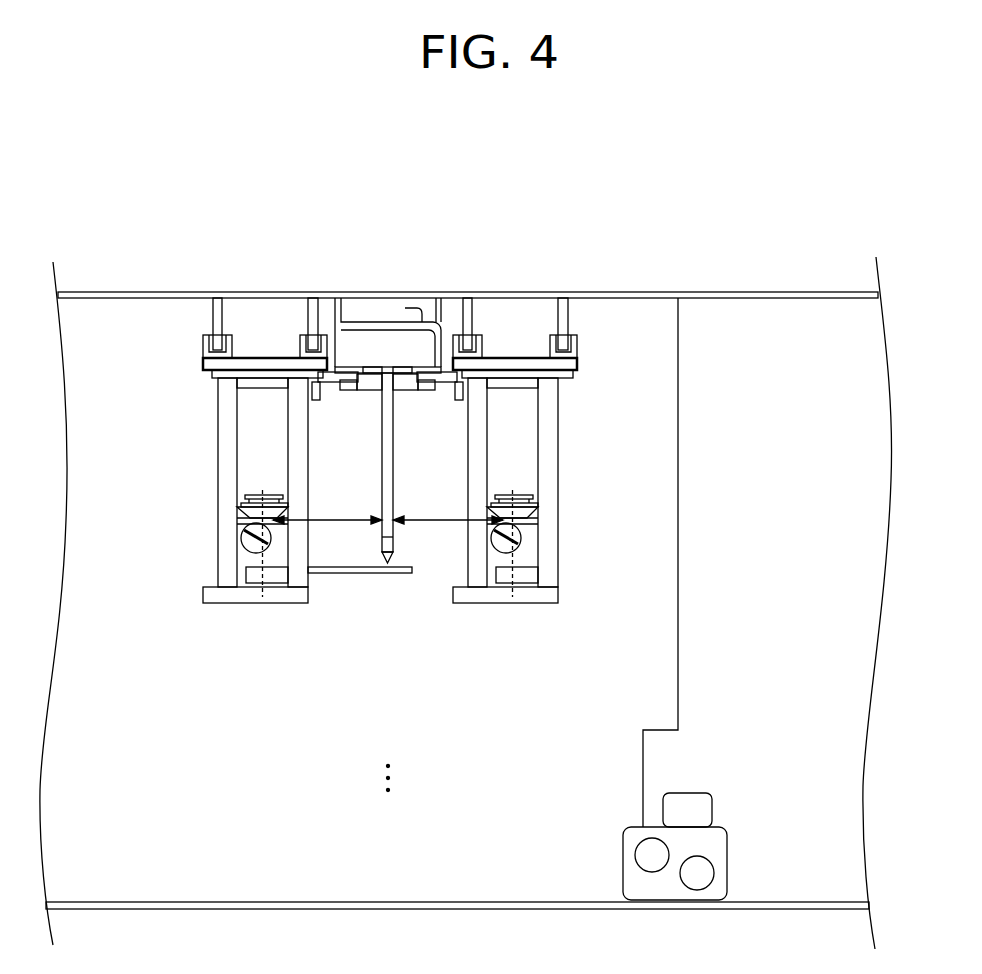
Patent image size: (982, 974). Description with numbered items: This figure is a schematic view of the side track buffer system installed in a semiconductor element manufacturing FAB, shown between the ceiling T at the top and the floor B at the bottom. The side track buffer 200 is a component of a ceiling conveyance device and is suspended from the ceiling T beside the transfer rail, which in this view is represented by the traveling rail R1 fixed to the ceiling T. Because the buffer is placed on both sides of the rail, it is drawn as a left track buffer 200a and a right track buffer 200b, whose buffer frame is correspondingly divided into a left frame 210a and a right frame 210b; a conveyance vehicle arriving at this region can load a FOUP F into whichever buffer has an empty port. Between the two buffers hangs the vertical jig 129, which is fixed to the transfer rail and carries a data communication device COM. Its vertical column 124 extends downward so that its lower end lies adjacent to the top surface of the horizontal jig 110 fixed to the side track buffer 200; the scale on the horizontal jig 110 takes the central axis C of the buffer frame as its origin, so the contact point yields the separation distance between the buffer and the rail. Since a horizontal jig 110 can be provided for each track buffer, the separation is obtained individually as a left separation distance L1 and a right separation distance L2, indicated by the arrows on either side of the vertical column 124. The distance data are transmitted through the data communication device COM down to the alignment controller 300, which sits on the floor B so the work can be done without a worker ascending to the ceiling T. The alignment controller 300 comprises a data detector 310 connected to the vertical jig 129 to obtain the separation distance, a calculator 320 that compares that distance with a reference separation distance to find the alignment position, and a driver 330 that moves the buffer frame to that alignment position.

The ceiling T is at (131, 292).
The floor B is at (244, 902).
The semiconductor FAB is at (800, 509).
The side track buffer 200 is at (192, 425).
The left track buffer 200a is at (218, 462).
The right track buffer 200b is at (557, 466).
The left frame 210a is at (297, 582).
The right frame 210b is at (478, 582).
The central axis C is at (243, 550).
The FOUP F is at (532, 551).
The vertical jig 129 is at (397, 367).
The data communication device COM is at (365, 367).
The traveling rail R1 is at (322, 393).
The vertical column 124 is at (382, 466).
The left separation distance L1 is at (327, 532).
The right separation distance L2 is at (448, 532).
The horizontal jig 110 is at (373, 575).
The alignment controller 300 is at (719, 779).
The data detector 310 is at (635, 854).
The calculator 320 is at (715, 873).
The driver 330 is at (713, 808).